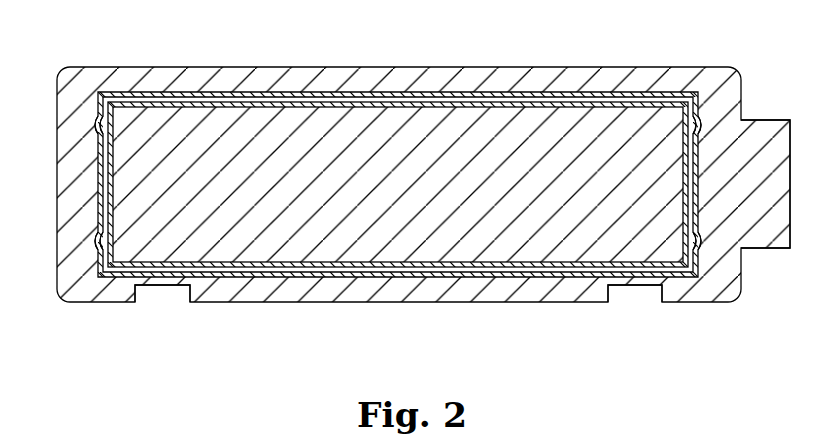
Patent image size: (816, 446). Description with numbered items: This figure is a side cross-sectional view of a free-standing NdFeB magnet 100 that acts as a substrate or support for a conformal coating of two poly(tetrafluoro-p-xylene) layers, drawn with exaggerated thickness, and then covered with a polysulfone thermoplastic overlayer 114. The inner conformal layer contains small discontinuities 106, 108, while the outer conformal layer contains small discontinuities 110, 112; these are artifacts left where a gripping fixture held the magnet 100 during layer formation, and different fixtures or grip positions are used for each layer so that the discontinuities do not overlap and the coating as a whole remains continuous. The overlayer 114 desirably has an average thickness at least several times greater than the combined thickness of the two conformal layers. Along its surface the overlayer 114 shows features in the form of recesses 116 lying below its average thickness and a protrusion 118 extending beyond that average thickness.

The NdFeB magnet 100 is at (537, 252).
The small discontinuity 106 is at (121, 120).
The small discontinuity 108 is at (682, 121).
The small discontinuity 110 is at (96, 239).
The small discontinuity 112 is at (699, 250).
The polysulfone thermoplastic overlayer 114 is at (415, 80).
The recess feature 116 is at (162, 288).
The protrusion feature 118 is at (765, 130).